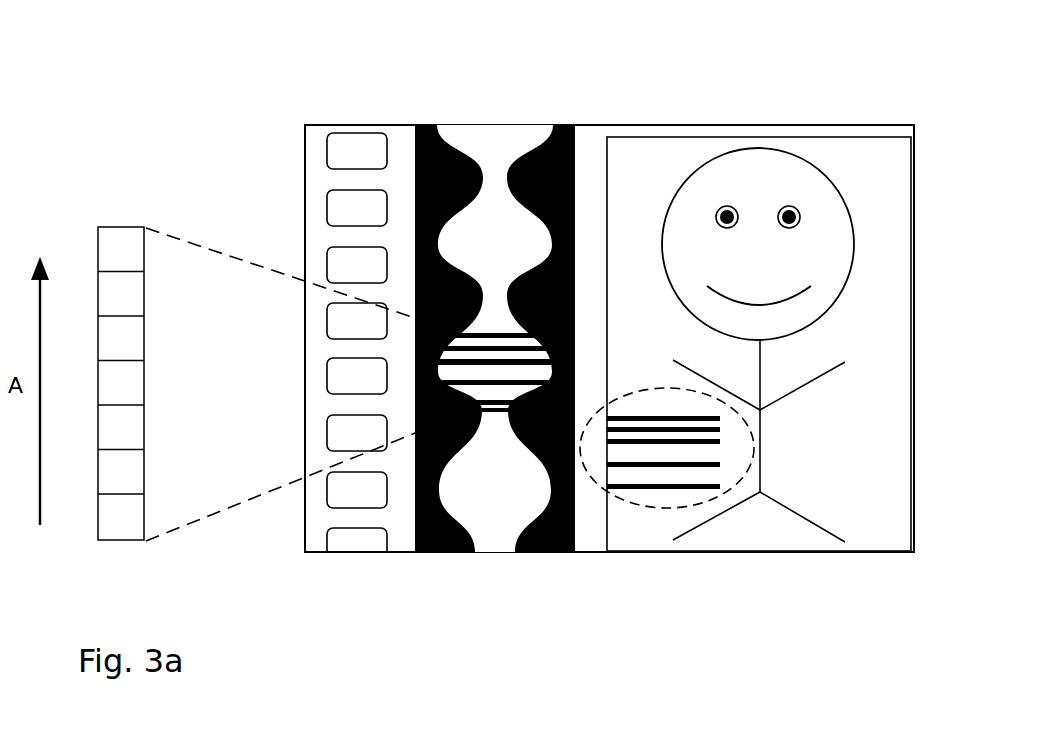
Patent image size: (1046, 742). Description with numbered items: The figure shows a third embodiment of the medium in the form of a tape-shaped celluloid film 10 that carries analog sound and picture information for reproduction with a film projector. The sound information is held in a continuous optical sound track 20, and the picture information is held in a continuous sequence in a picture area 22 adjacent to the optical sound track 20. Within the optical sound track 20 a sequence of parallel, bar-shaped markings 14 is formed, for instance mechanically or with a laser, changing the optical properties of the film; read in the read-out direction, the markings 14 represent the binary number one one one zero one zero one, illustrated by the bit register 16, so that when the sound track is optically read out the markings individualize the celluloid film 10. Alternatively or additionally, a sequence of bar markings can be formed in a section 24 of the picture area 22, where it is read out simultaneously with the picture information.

The celluloid film 10 is at (317, 147).
The markings 14 is at (503, 410).
The data bit sequence 16 is at (134, 226).
The optical sound track 20 is at (490, 137).
The picture area 22 is at (853, 160).
The section of the picture area 24 is at (652, 508).